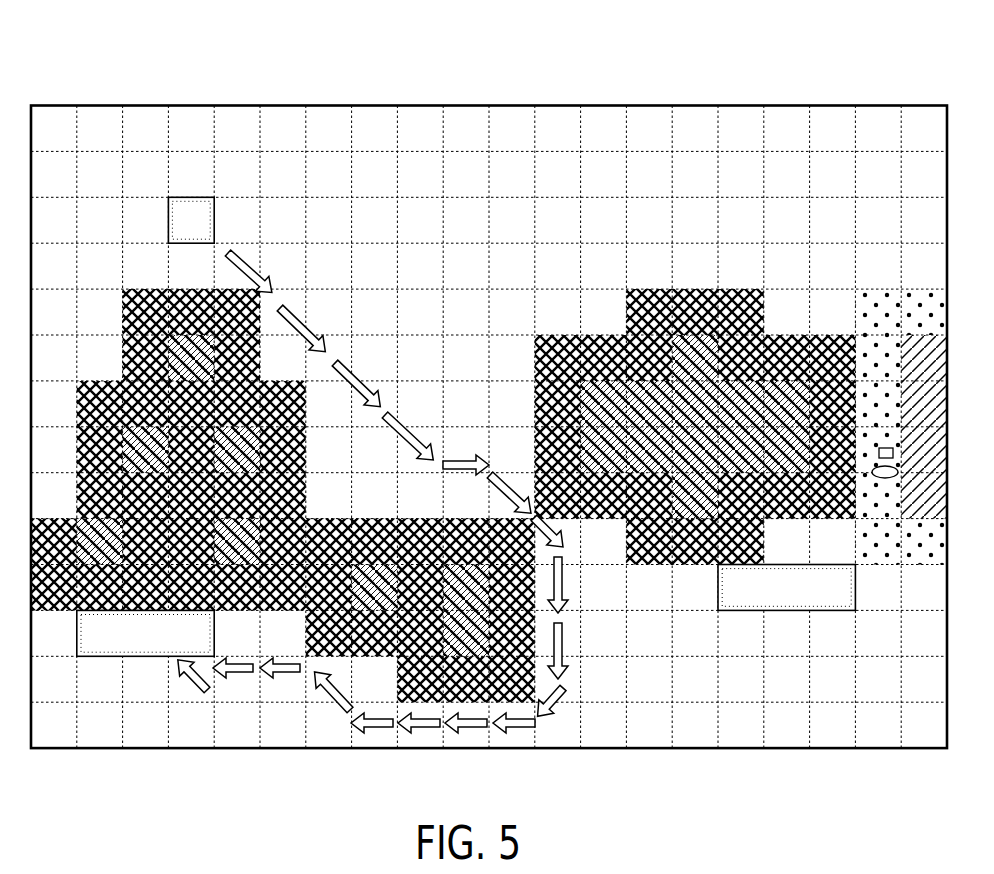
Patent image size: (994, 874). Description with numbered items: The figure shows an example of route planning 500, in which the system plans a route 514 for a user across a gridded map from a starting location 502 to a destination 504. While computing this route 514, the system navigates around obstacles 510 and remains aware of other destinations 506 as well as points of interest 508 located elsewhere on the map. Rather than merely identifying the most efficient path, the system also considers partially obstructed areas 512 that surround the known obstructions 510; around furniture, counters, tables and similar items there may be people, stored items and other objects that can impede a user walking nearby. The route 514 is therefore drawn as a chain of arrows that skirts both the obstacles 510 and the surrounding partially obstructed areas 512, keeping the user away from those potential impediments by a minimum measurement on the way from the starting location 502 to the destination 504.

The route planning 500 is at (760, 93).
The starting location 502 is at (190, 196).
The destination 504 is at (149, 658).
The other destinations 506 is at (782, 612).
The points of interest 508 is at (908, 567).
The obstacles 510 is at (168, 352).
The partially obstructed areas 512 is at (140, 289).
The route 514 is at (513, 730).